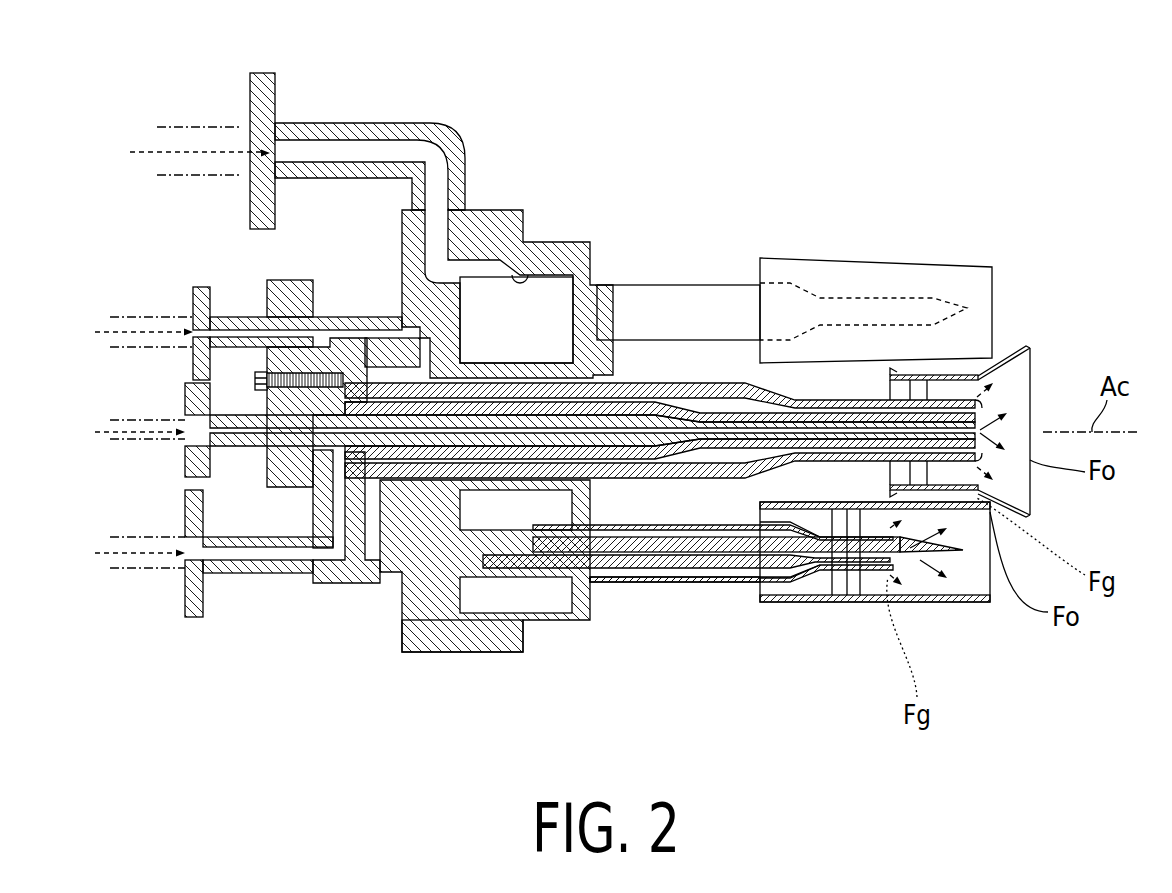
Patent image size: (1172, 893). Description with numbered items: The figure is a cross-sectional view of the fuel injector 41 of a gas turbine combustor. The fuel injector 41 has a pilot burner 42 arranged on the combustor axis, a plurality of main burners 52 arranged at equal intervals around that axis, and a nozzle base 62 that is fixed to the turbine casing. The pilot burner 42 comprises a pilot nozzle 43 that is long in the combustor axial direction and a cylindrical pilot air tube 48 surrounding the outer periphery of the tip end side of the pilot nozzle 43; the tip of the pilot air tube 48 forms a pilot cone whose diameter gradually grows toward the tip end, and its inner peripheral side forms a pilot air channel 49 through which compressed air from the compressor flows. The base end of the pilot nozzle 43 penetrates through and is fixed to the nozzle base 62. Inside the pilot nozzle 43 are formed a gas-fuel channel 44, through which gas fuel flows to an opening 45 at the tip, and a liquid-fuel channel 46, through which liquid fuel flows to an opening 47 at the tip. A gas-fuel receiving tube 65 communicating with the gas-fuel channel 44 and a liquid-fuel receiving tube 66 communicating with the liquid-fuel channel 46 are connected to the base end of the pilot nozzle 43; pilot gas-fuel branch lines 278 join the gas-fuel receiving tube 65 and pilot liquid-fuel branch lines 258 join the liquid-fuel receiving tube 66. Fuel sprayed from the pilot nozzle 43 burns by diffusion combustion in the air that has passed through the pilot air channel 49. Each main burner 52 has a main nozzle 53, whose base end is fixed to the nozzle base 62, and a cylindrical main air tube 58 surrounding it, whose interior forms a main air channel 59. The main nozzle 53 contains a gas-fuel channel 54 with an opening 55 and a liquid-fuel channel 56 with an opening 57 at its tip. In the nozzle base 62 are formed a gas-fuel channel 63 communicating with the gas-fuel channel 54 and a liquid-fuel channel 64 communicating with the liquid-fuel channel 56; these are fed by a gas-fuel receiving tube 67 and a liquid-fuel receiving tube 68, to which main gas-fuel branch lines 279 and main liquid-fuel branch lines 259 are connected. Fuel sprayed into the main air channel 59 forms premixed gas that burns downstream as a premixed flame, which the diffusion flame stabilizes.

The fuel injector 41 is at (243, 60).
The pilot burner 42 is at (1036, 366).
The pilot nozzle 43 is at (663, 400).
The gas-fuel channel 44 is at (723, 385).
The opening 45 is at (978, 378).
The liquid-fuel channel 46 is at (625, 430).
The opening 47 is at (1030, 512).
The pilot air tube 48 is at (923, 390).
The pilot air channel 49 is at (952, 392).
The main burner 52 is at (912, 250).
The main nozzle 53 is at (615, 283).
The gas-fuel channel 54 is at (682, 527).
The opening 55 is at (883, 567).
The liquid-fuel channel 56 is at (735, 582).
The opening 57 is at (923, 568).
The main air tube 58 is at (815, 258).
The main air channel 59 is at (800, 583).
The nozzle base 62 is at (405, 655).
The gas-fuel channel 63 is at (517, 275).
The liquid-fuel channel 64 is at (427, 527).
The gas-fuel receiving tube 65 is at (257, 567).
The liquid-fuel receiving tube 66 is at (238, 440).
The gas-fuel receiving tube 67 is at (328, 123).
The liquid-fuel receiving tube 68 is at (243, 313).
The pilot liquid-fuel branch lines 258 is at (130, 417).
The main liquid-fuel branch lines 259 is at (117, 305).
The pilot gas-fuel branch lines 278 is at (125, 537).
The main gas-fuel branch lines 279 is at (160, 125).